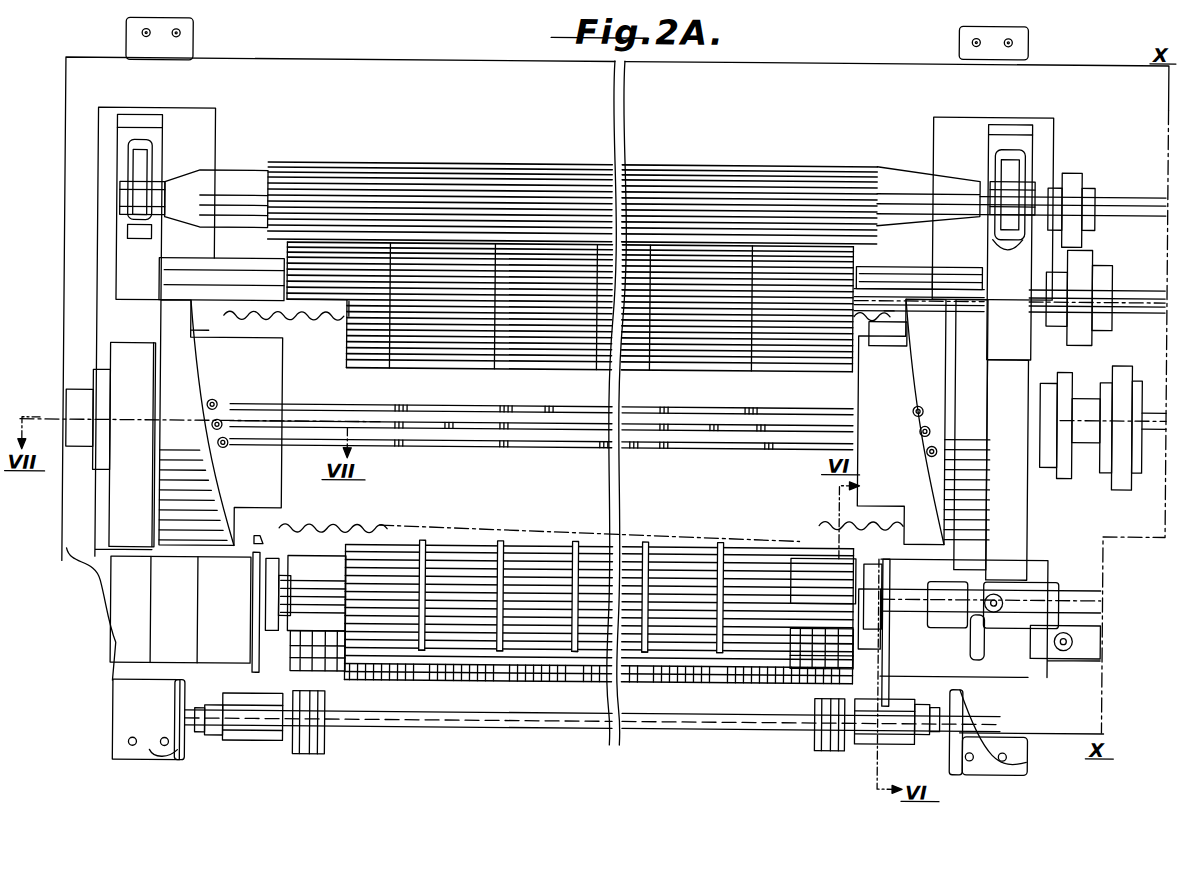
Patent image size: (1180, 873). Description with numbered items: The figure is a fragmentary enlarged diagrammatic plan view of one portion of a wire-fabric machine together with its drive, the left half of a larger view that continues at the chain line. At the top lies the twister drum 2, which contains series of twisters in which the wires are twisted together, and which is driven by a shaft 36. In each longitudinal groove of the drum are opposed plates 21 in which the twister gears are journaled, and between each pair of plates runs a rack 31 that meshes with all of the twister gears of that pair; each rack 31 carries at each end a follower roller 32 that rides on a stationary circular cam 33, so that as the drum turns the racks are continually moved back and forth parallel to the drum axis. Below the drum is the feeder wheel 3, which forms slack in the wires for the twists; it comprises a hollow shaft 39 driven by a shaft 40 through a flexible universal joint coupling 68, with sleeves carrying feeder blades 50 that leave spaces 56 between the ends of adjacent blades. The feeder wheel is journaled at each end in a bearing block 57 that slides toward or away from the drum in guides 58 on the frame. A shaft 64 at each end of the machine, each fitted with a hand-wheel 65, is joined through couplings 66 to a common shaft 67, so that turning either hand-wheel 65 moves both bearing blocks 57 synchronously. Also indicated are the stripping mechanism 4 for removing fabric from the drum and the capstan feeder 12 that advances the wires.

The twister drum 2 is at (706, 495).
The feeder wheel 3 is at (480, 638).
The stripping mechanism 4 is at (522, 250).
The capstan feeder 12 is at (385, 672).
The plates 21 is at (330, 340).
The rack 31 is at (238, 305).
The follower roller 32 is at (208, 318).
The stationary circular cam 33 is at (185, 438).
The shaft 36 is at (1070, 470).
The hollow shaft 39 is at (330, 665).
The shaft 40 is at (1072, 595).
The feeder blade 50 is at (698, 645).
The spaces 56 is at (578, 540).
The bearing block 57 is at (278, 595).
The guides 58 is at (252, 632).
The shaft 64 is at (208, 735).
The hand-wheel 65 is at (178, 692).
The couplings 66 is at (322, 750).
The shaft 67 is at (556, 728).
The flexible universal joint coupling 68 is at (997, 595).